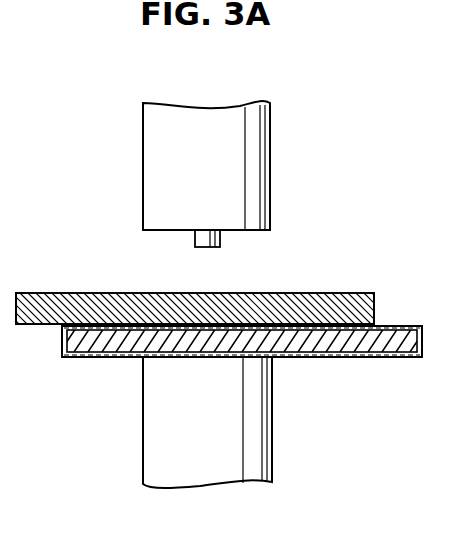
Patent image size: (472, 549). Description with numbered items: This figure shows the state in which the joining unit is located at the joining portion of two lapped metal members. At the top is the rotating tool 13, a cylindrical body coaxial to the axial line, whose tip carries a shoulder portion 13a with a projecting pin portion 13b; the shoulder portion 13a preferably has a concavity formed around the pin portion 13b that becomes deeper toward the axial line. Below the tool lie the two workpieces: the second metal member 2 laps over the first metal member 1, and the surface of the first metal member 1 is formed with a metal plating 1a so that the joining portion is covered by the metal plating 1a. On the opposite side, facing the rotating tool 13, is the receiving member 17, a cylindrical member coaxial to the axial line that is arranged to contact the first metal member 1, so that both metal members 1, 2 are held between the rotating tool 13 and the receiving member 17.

The rotating tool 13 is at (150, 163).
The shoulder portion 13a is at (160, 232).
The pin portion 13b is at (222, 248).
The second metal member 2 is at (347, 294).
The first metal member 1 is at (400, 347).
The metal plating 1a is at (357, 358).
The receiving member 17 is at (150, 438).